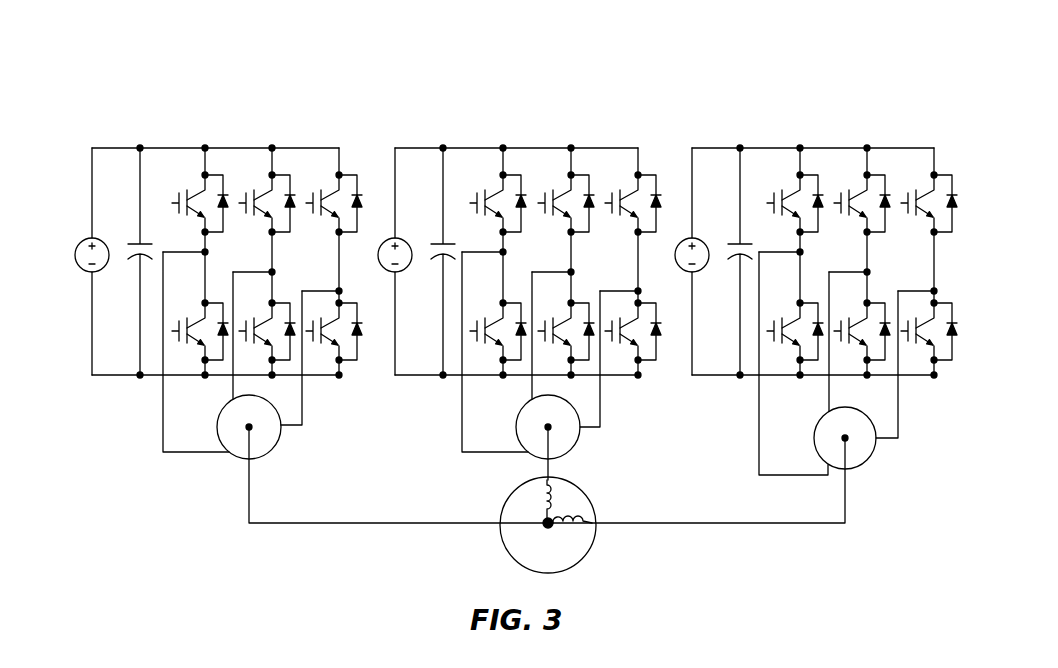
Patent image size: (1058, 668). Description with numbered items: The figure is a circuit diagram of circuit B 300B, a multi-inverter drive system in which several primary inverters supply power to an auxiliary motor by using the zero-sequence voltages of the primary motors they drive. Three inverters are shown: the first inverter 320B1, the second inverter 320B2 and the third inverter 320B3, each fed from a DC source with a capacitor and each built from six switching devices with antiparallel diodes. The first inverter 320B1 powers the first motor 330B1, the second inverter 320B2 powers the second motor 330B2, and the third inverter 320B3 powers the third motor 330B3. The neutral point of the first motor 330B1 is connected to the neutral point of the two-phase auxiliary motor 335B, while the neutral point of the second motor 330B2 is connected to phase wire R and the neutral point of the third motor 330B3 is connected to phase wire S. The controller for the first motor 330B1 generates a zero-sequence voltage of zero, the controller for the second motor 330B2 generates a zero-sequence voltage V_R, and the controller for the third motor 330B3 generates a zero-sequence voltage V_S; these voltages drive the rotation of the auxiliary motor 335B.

The circuit B 300B is at (90, 47).
The inverter 1 320B1 is at (358, 115).
The inverter 2 320B2 is at (662, 115).
The inverter 3 320B3 is at (962, 115).
The motor 1 330B1 is at (279, 440).
The motor 2 330B2 is at (579, 438).
The motor 3 330B3 is at (876, 447).
The two-phase auxiliary motor 335B is at (589, 548).